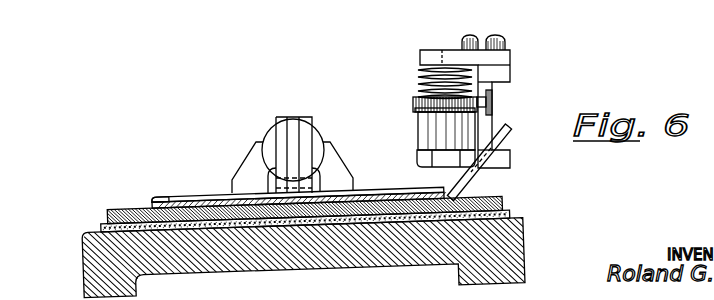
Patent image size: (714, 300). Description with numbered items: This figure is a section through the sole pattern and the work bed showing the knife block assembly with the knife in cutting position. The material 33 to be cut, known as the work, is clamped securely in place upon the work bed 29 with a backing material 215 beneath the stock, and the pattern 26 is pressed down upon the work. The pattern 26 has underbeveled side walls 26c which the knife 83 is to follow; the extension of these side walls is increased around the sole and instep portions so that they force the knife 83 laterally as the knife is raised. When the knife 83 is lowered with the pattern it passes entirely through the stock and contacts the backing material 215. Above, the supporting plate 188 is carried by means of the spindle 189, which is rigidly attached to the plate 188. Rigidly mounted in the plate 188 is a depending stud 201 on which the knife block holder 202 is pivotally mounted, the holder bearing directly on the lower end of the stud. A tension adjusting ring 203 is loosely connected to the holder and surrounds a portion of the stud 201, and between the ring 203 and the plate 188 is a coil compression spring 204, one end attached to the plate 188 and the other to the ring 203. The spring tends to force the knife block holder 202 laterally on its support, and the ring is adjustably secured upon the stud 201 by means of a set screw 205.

The pattern 26 is at (176, 196).
The side walls 26c is at (151, 200).
The work bed 29 is at (523, 250).
The material 33 is at (504, 203).
The backing material 215 is at (511, 213).
The knife 83 is at (512, 128).
The supporting plate 188 is at (511, 58).
The spindle 189 is at (468, 38).
The depending stud 201 is at (413, 100).
The knife block holder 202 is at (421, 130).
The tension adjusting ring 203 is at (414, 110).
The coil compression spring 204 is at (420, 72).
The set screw 205 is at (489, 104).